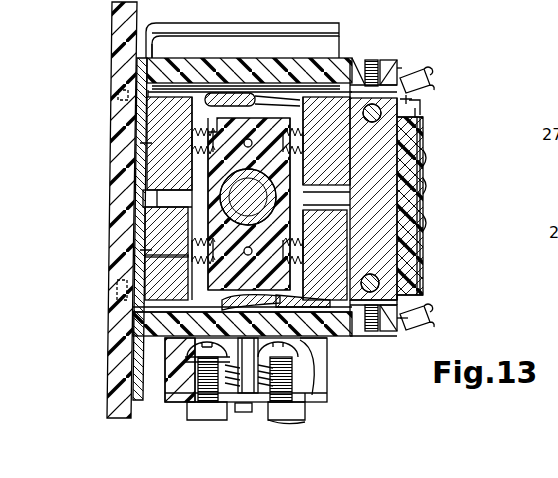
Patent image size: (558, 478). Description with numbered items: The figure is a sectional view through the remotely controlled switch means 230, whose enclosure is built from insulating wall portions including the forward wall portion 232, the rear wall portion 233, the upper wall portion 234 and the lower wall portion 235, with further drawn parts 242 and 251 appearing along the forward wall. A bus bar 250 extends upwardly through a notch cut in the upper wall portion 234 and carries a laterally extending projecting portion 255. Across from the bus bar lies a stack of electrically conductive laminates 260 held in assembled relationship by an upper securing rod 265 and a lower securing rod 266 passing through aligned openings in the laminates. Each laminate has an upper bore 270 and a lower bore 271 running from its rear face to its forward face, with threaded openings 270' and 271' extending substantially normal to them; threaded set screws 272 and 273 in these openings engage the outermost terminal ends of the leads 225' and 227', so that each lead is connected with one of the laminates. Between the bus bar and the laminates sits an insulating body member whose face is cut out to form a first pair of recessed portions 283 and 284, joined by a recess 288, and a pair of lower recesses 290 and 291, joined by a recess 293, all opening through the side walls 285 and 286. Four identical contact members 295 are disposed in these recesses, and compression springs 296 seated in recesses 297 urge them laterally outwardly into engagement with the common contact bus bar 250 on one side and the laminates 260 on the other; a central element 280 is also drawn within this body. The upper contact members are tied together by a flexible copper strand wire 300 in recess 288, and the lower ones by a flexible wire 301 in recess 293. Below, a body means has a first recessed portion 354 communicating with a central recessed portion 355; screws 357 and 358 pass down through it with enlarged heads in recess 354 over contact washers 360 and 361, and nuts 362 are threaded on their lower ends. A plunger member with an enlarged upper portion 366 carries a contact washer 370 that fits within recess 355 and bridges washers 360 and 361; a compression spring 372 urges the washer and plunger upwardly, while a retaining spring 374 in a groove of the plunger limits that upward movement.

The housing 242 is at (13, 16).
The forward wall portion 232 is at (114, 126).
The mounting screw 251 is at (118, 92).
The laterally extending projecting portion 255 is at (240, 26).
The flexible copper strand wire 300 is at (228, 100).
The recess 288 is at (249, 68).
The upper wall portion 234 is at (352, 62).
The recesses 297 is at (246, 113).
The enlarged upper portion 366 is at (236, 299).
The recessed portion 283 is at (169, 143).
The compression springs 296 is at (248, 192).
The lower recess 290 is at (166, 232).
The recess 293 is at (166, 277).
The side wall 285 is at (140, 199).
The bus bar 250 is at (142, 184).
The contact members 295 is at (155, 143).
The ball 280 is at (244, 145).
The recessed portion 284 is at (326, 141).
The lower recess 291 is at (326, 246).
The electrically conductive laminates 260 is at (420, 156).
The upper securing rod 265 is at (417, 138).
The side wall 286 is at (420, 222).
The rear wall portion 233 is at (422, 113).
The upper bore 270 is at (380, 59).
The threaded set screw 272 is at (394, 66).
The threaded opening 270' is at (441, 61).
The lead 225' is at (447, 80).
The remotely controlled switch means 230 is at (428, 35).
The lower bore 271 is at (391, 327).
The threaded set screw 273 is at (372, 346).
The threaded opening 271' is at (389, 346).
The lead 227' is at (441, 320).
The lower securing rod 266 is at (398, 298).
The flexible wire 301 is at (170, 349).
The contact washer 360 is at (192, 363).
The compression spring 372 is at (195, 379).
The central recessed portion 355 is at (185, 393).
The screw 357 is at (195, 420).
The retaining spring 374 is at (243, 407).
The contact washer 370 is at (280, 388).
The contact washer 361 is at (275, 373).
The nuts 362 is at (306, 412).
The screw 358 is at (383, 418).
The lower wall portion 235 is at (330, 378).
The first recessed portion 354 is at (335, 392).